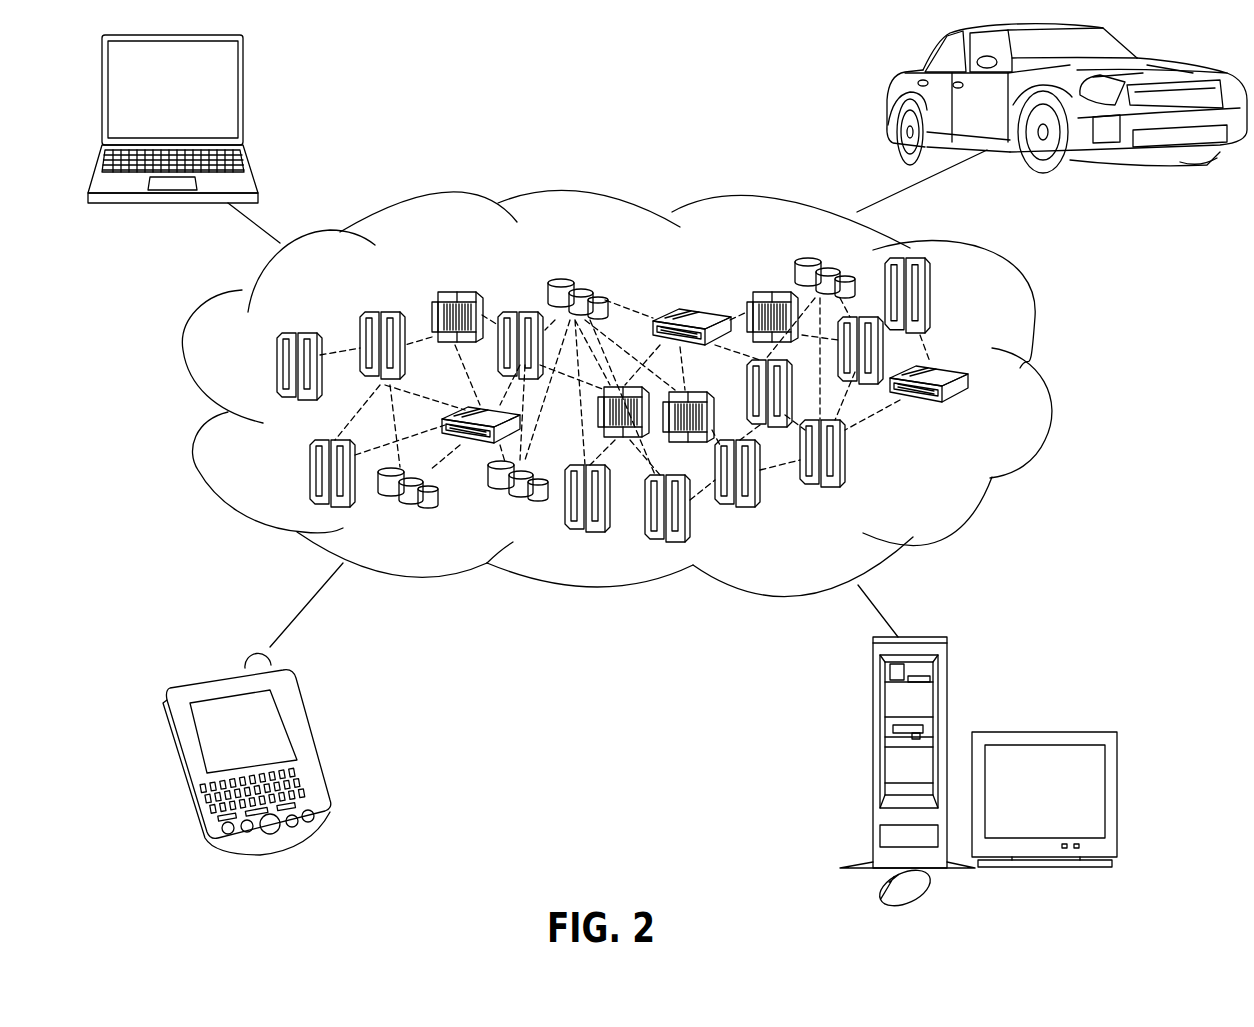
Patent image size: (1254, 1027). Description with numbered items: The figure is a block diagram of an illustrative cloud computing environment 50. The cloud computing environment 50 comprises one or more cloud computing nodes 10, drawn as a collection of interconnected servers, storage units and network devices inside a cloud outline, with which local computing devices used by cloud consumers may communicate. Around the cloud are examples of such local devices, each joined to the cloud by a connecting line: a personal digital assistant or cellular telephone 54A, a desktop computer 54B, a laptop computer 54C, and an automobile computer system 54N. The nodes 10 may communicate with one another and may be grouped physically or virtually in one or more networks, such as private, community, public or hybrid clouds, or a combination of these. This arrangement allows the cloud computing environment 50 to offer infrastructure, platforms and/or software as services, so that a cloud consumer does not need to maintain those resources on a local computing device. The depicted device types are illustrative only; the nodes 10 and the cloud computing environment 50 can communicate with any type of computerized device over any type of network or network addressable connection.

The cloud computing node 10 is at (948, 484).
The cloud computing environment 50 is at (1043, 385).
The personal digital assistant or cellular telephone 54A is at (297, 712).
The desktop computer 54B is at (873, 700).
The laptop computer 54C is at (243, 72).
The automobile computer system 54N is at (890, 90).